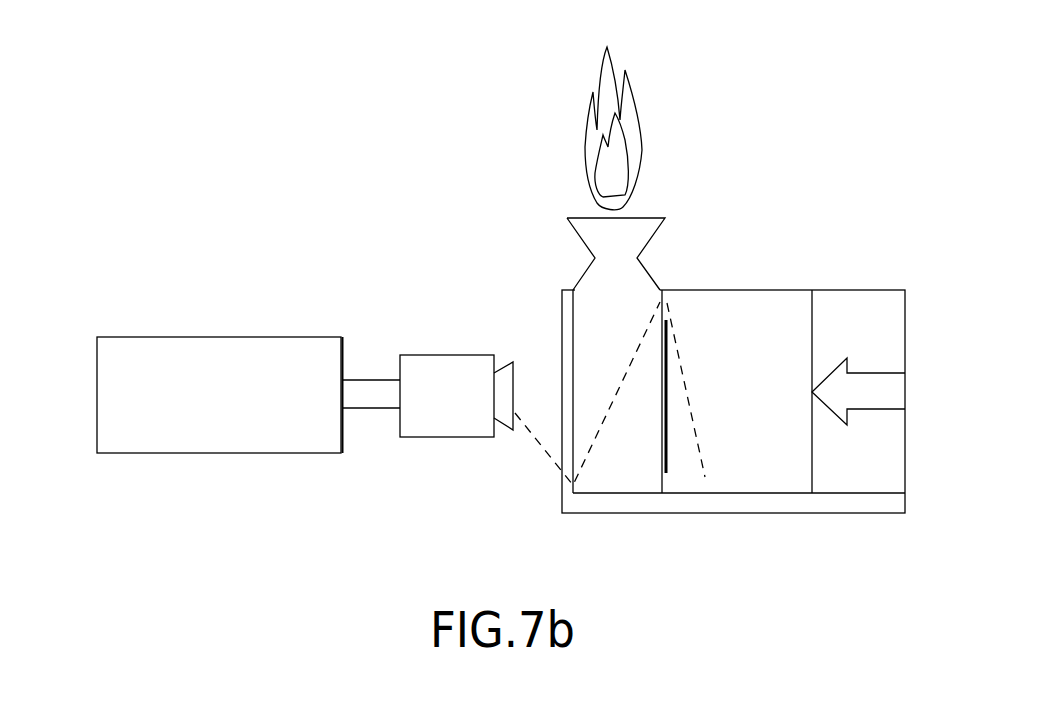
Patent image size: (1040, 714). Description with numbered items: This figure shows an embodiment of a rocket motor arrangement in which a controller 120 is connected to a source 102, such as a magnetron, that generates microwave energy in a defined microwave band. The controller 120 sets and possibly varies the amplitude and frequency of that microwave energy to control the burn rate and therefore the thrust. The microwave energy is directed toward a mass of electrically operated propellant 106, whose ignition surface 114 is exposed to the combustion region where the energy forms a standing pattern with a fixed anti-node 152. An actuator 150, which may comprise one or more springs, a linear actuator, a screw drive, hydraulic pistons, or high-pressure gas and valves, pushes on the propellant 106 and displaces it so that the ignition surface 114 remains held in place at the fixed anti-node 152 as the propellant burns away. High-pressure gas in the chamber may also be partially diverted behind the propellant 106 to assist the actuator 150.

The controller 120 is at (162, 337).
The source 102 is at (447, 437).
The electrically operated propellant 106 is at (771, 402).
The anti-node 152 is at (664, 303).
The ignition surface 114 is at (667, 388).
The actuator 150 is at (888, 388).